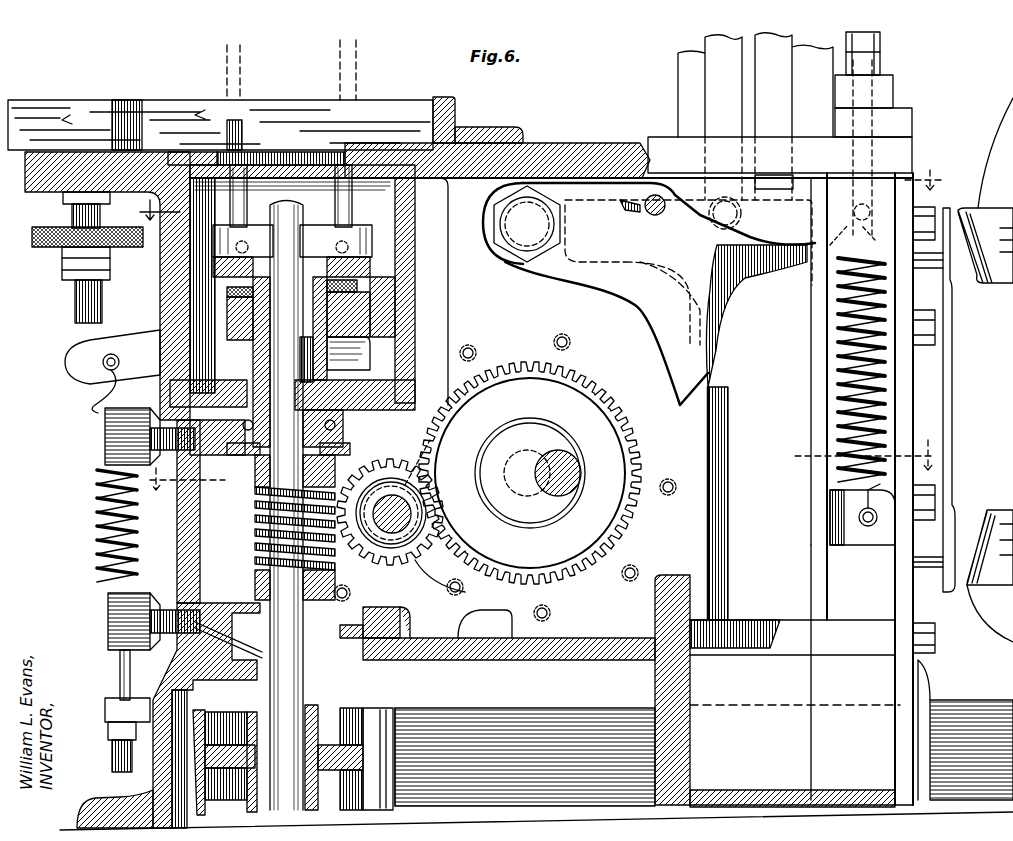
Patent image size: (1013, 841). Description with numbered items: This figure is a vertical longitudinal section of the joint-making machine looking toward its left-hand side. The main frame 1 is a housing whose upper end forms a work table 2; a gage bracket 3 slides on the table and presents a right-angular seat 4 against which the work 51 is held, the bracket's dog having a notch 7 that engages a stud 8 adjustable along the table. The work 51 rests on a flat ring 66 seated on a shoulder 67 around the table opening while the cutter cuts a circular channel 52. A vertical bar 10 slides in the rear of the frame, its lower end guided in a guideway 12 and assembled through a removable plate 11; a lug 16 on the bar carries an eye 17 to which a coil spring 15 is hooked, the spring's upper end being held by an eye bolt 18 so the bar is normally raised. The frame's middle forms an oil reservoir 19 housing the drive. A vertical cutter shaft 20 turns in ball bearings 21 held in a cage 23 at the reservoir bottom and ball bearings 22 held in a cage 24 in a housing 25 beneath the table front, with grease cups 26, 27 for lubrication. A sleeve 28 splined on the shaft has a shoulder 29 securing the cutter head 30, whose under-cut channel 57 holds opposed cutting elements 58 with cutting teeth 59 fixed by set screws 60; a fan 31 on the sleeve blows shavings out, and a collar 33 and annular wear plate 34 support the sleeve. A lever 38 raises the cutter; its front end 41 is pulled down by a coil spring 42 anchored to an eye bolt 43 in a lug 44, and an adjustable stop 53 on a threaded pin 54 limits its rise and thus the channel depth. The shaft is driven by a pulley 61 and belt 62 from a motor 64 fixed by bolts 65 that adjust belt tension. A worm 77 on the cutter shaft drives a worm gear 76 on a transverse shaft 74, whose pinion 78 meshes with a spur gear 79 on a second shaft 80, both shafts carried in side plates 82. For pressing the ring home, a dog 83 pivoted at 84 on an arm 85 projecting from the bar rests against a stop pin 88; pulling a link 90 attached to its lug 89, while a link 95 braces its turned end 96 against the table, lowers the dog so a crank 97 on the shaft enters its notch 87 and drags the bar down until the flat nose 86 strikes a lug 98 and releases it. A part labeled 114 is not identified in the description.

The main frame 1 is at (178, 530).
The work table 2 is at (565, 155).
The gage bracket 3 is at (490, 128).
The right-angular seat 4 is at (452, 114).
The notch 7 is at (541, 467).
The stud 8 is at (541, 197).
The vertical bar 10 is at (700, 538).
The removable plate 11 is at (905, 322).
The pocket or guideway 12 is at (662, 598).
The coil spring 15 is at (840, 413).
The rearwardly projecting lug 16 is at (795, 648).
The eye 17 is at (862, 528).
The eye bolt 18 is at (850, 224).
The oil reservoir 19 is at (505, 477).
The vertical cutter shaft 20 is at (312, 518).
The ball bearings 21 is at (408, 622).
The ball bearings 22 is at (345, 362).
The cage 23 is at (390, 678).
The cage 24 is at (395, 378).
The housing 25 is at (395, 297).
The grease cup 26 is at (122, 612).
The grease cup 27 is at (115, 443).
The sleeve 28 is at (366, 298).
The shoulder 29 is at (352, 326).
The cutter head 30 is at (188, 268).
The fan 31 is at (372, 340).
The collar 33 is at (380, 322).
The annular wear plate 34 is at (228, 294).
The lever 38 is at (175, 335).
The front end 41 is at (78, 358).
The coil spring 42 is at (98, 505).
The eye bolt 43 is at (118, 678).
The lug 44 is at (105, 712).
The work 51 is at (400, 108).
The circular channel 52 is at (243, 120).
The stop 53 is at (32, 238).
The threaded pin 54 is at (74, 300).
The under-cut channel 57 is at (325, 226).
The cutting elements 58 is at (370, 262).
The cutting teeth 59 is at (335, 176).
The set screws 60 is at (348, 241).
The pulley 61 is at (398, 728).
The belt 62 is at (580, 718).
The motor 64 is at (971, 449).
The bolts 65 is at (932, 572).
The flat ring 66 is at (183, 152).
The shoulder 67 is at (420, 200).
The transverse shaft 74 is at (378, 530).
The worm gear 76 is at (418, 570).
The worm 77 is at (262, 512).
The pinion 78 is at (440, 470).
The spur gear 79 is at (640, 500).
The transverse shaft 80 is at (520, 452).
The side plates 82 is at (485, 365).
The dog 83 is at (688, 272).
The pivot 84 is at (508, 228).
The arm 85 is at (628, 280).
The flat nose 86 is at (620, 410).
The notch 87 is at (628, 306).
The stop pin 88 is at (660, 200).
The rearwardly projecting lug 89 is at (745, 250).
The link 90 is at (718, 93).
The link 95 is at (785, 64).
The laterally turned end 96 is at (766, 180).
The crank 97 is at (575, 490).
The lug 98 is at (485, 624).
The bolt 114 is at (362, 60).